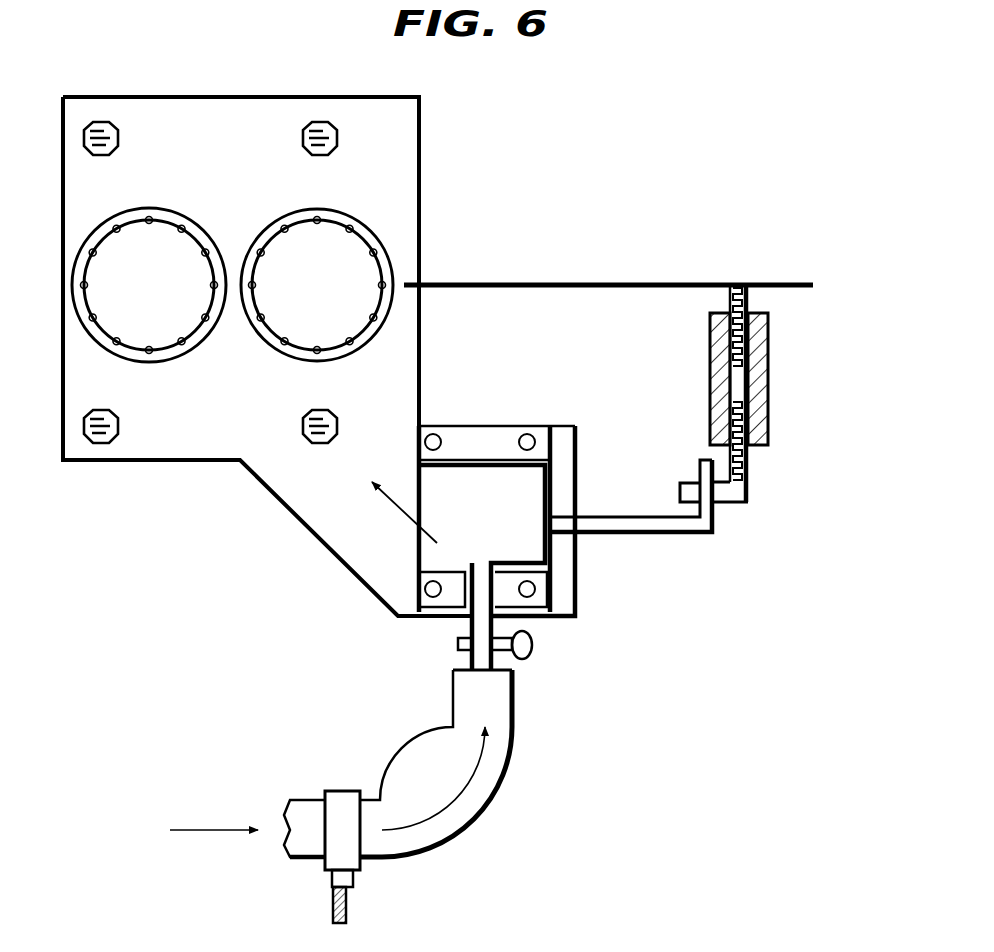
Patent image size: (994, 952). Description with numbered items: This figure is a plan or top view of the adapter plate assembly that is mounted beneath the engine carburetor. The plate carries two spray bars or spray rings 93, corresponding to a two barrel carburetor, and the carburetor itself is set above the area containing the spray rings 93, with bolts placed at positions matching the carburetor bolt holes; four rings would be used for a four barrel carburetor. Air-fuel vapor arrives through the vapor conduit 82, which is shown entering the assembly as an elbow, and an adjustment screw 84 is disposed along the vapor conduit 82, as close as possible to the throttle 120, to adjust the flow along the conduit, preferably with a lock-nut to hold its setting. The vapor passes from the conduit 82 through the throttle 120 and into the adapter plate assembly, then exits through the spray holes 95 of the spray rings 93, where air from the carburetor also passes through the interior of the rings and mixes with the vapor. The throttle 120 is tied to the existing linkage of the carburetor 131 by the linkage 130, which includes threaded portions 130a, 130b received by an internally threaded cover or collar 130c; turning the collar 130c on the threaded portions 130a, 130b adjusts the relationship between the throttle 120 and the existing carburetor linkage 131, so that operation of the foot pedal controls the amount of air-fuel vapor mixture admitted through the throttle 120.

The spray rings 93 is at (277, 352).
The spray holes 95 is at (253, 285).
The throttle 120 is at (477, 478).
The existing carburetor linkage 131 is at (663, 284).
The linkage 130 is at (703, 448).
The threaded portion 130a is at (752, 458).
The threaded portion 130b is at (748, 300).
The internally threaded cover or collar 130c is at (768, 380).
The vapor conduit 82 is at (493, 802).
The adjustment screw 84 is at (367, 885).